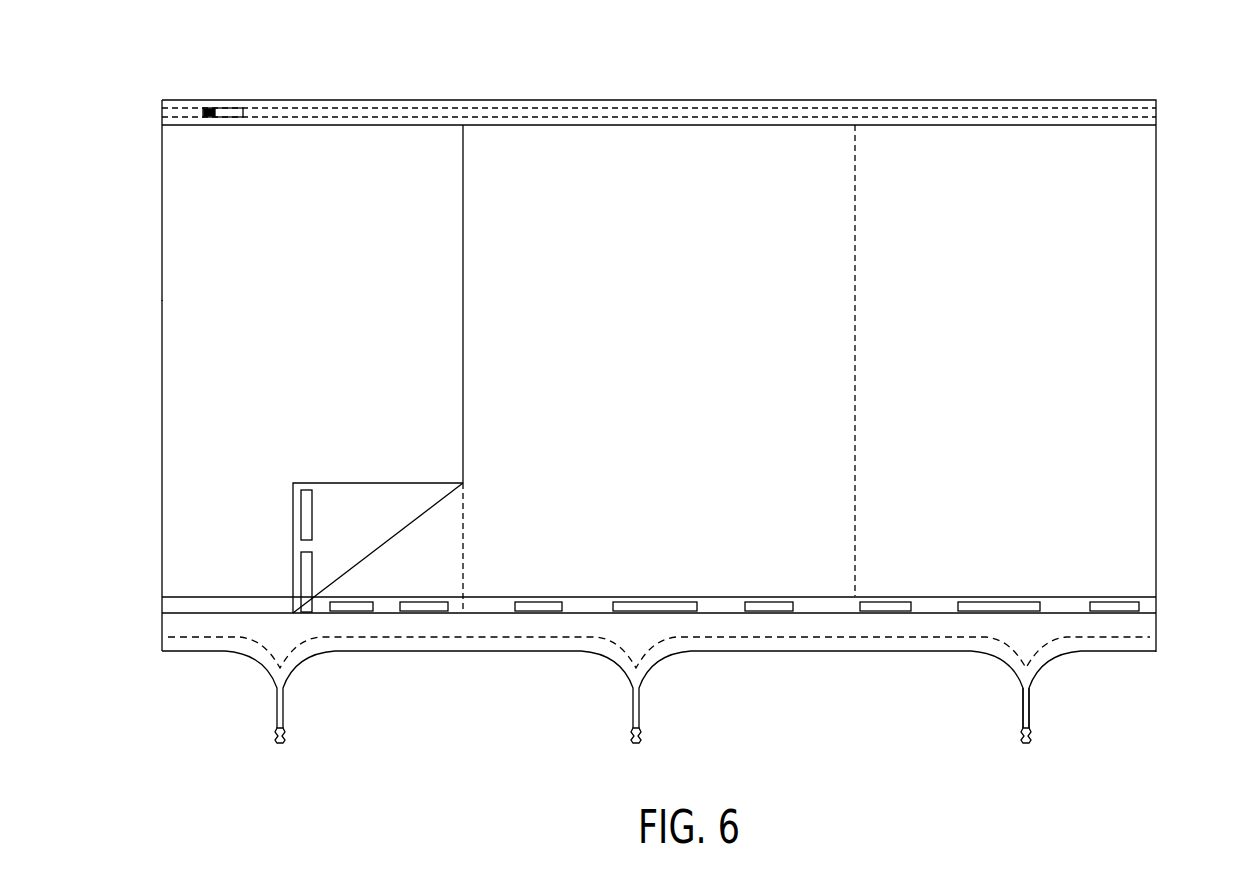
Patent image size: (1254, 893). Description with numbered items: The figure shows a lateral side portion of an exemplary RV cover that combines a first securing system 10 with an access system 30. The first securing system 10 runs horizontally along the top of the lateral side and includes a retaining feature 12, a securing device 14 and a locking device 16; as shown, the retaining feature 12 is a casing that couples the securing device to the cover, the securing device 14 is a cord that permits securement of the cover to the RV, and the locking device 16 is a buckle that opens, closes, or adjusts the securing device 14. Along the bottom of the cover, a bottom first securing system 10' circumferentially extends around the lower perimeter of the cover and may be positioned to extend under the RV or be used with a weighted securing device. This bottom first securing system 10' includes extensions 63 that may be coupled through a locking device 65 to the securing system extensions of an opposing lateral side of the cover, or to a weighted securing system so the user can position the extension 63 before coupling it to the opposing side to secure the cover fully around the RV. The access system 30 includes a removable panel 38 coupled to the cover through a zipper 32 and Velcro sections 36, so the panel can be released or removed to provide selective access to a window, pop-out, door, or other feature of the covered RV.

The first securing system 10 is at (659, 339).
The bottom first securing system 10' is at (694, 690).
The retaining feature 12 is at (1135, 100).
The securing device 14 is at (236, 107).
The locking device 16 is at (207, 108).
The access system 30 is at (228, 552).
The zipper 32 is at (464, 548).
The Velcro sections 36 is at (362, 606).
The removable panel 38 is at (212, 497).
The extensions 63 is at (1032, 708).
The locking device 65 is at (1020, 737).